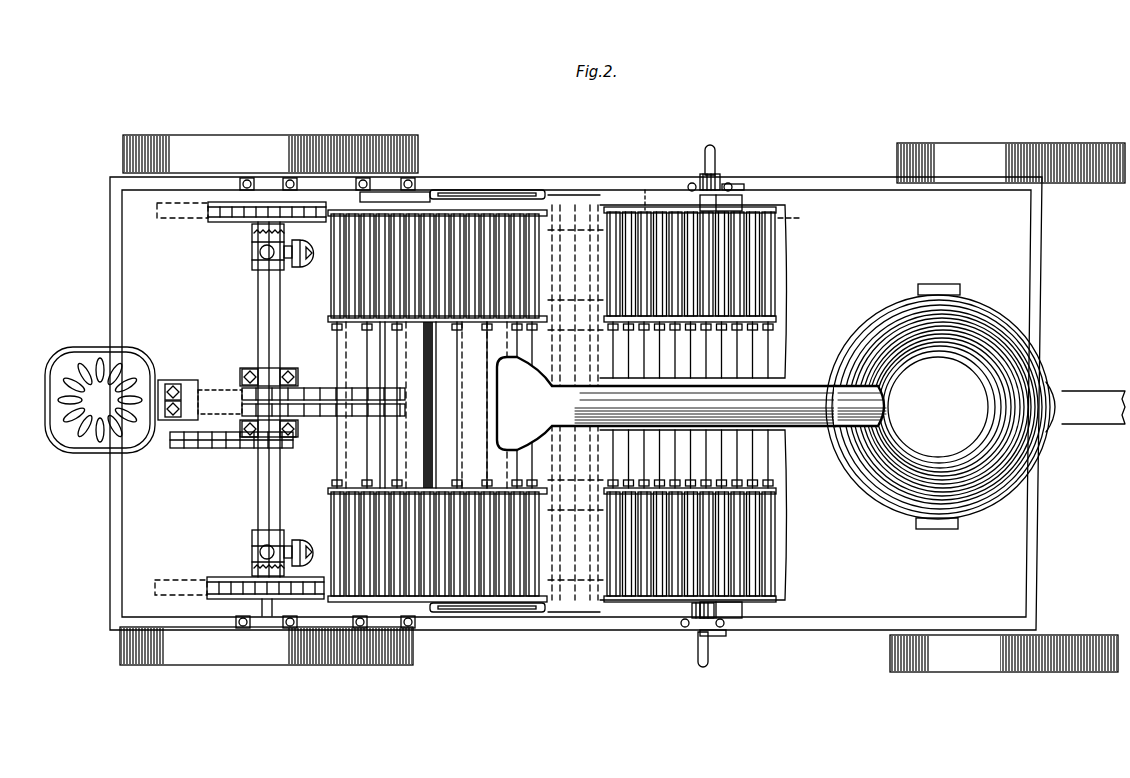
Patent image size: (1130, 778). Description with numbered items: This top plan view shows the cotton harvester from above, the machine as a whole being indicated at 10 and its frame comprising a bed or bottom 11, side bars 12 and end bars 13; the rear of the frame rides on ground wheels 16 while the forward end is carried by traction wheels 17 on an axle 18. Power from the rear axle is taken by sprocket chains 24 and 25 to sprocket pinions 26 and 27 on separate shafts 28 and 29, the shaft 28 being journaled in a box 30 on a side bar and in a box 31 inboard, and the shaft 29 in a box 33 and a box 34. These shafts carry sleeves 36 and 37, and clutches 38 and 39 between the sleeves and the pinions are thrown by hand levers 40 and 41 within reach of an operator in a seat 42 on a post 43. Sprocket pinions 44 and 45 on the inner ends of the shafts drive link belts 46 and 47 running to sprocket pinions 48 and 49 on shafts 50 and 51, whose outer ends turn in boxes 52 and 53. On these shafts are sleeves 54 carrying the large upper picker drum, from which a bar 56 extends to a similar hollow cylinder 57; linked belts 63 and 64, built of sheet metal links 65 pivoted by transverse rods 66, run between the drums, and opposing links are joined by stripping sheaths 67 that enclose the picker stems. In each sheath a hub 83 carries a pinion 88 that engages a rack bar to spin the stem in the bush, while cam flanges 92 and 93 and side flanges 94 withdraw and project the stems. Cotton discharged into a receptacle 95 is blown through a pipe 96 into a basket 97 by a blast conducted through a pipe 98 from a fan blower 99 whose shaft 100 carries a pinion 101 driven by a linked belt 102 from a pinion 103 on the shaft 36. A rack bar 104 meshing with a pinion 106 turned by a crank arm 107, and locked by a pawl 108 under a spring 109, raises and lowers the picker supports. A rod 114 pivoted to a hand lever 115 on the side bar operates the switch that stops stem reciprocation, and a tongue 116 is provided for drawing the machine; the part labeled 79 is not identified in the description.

The direction of travel 10 is at (522, 473).
The bed or bottom 11 is at (832, 281).
The side bars 12 is at (615, 192).
The end bars 13 is at (118, 493).
The ground wheels 16 is at (240, 403).
The traction wheels 17 is at (1007, 407).
The axle 18 is at (1008, 183).
The sprocket chain 24 is at (318, 650).
The sprocket chain 25 is at (300, 205).
The sprocket pinion 26 is at (250, 595).
The sprocket pinion 27 is at (270, 212).
The shaft 28 is at (262, 605).
The shaft 29 is at (262, 212).
The box 30 is at (268, 612).
The box 31 is at (275, 440).
The box 33 is at (261, 160).
The box 34 is at (258, 368).
The sleeve 36 is at (258, 496).
The sleeve 37 is at (258, 303).
The clutch 38 is at (252, 562).
The clutch 39 is at (252, 234).
The hand lever 40 is at (260, 548).
The hand lever 41 is at (258, 255).
The seat 42 is at (125, 350).
The post 43 is at (168, 362).
The sprocket pinion 44 is at (240, 425).
The sprocket pinion 45 is at (244, 388).
The link belt 46 is at (345, 424).
The link belt 47 is at (318, 404).
The sprocket pinion 48 is at (340, 440).
The sprocket pinion 49 is at (346, 372).
The shaft 50 is at (335, 460).
The shaft 51 is at (376, 350).
The box 52 is at (410, 626).
The box 53 is at (412, 185).
The sleeves 54 is at (340, 318).
The bar 56 is at (370, 270).
The hollow cylinder 57 is at (760, 255).
The linked belt 63 is at (570, 205).
The linked belt 64 is at (595, 335).
The sheet metal links 65 is at (650, 207).
The rods 66 is at (792, 523).
The stripping sheath 67 is at (755, 272).
The hopper 79 is at (545, 362).
The hub 83 is at (772, 340).
The pinion 88 is at (770, 330).
The cam flanges 92 is at (316, 255).
The cam flanges 93 is at (790, 230).
The side flanges 94 is at (648, 185).
The receptacle 95 is at (436, 425).
The pipe 96 is at (797, 400).
The basket 97 is at (940, 406).
The pipe 98 is at (430, 390).
The fan blower 99 is at (238, 392).
The shaft 100 is at (144, 405).
The pinion 101 is at (190, 448).
The linked belt 102 is at (240, 448).
The pinion 103 is at (258, 458).
The rack bar 104 is at (743, 205).
The pinion 106 is at (722, 178).
The crank arm 107 is at (716, 153).
The pawl 108 is at (733, 180).
The spring 109 is at (745, 189).
The rod 114 is at (540, 190).
The hand lever 115 is at (505, 190).
The tongue 116 is at (1090, 391).